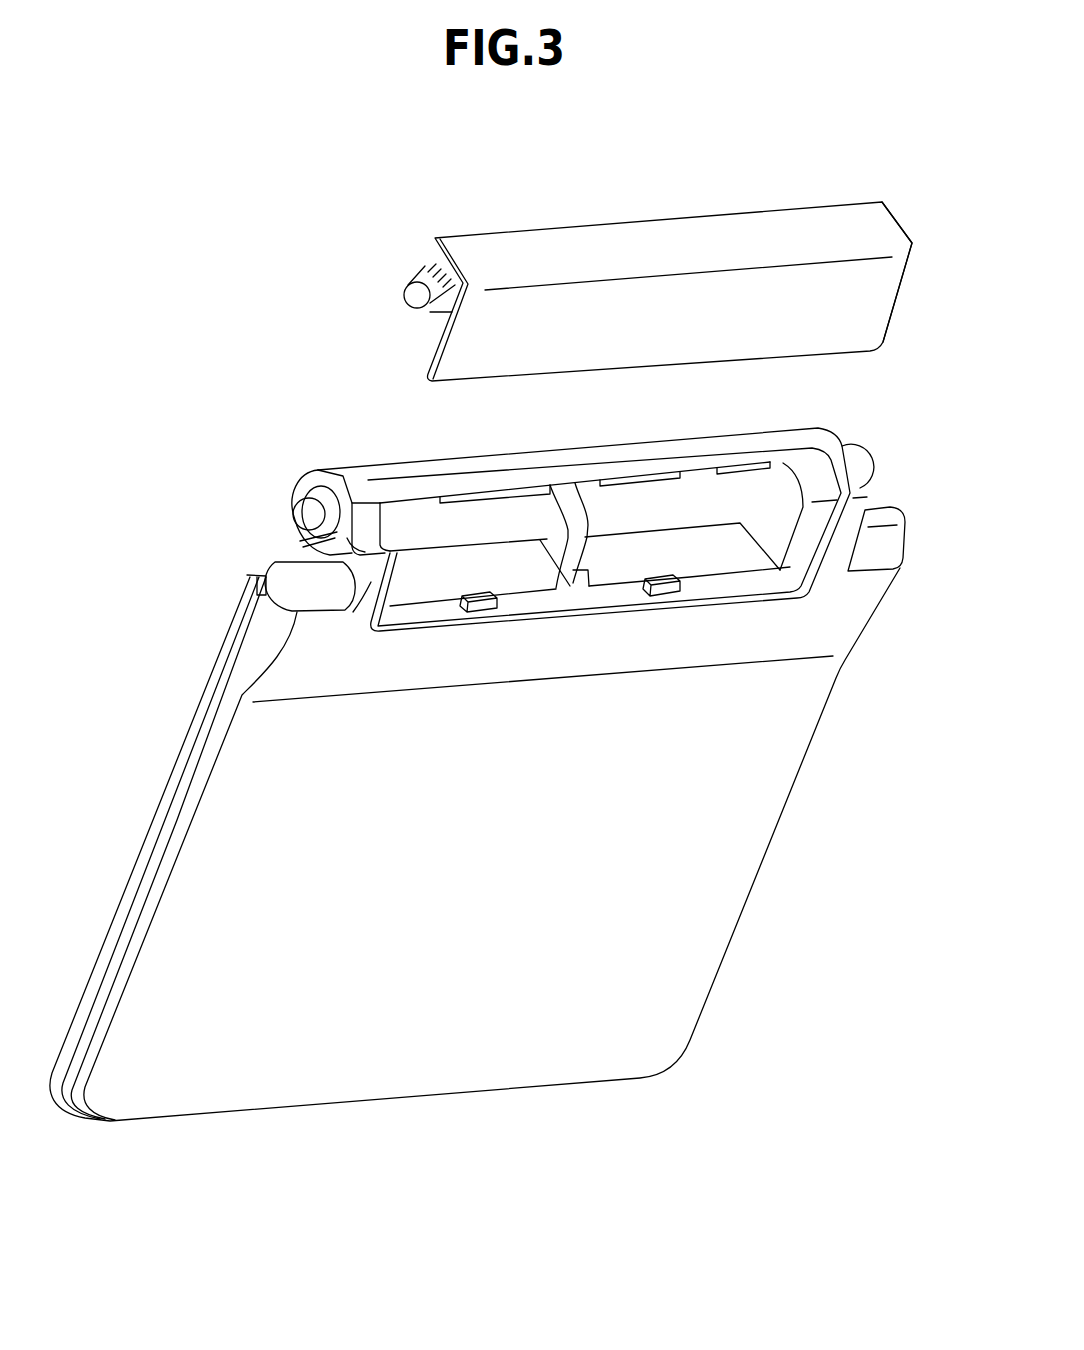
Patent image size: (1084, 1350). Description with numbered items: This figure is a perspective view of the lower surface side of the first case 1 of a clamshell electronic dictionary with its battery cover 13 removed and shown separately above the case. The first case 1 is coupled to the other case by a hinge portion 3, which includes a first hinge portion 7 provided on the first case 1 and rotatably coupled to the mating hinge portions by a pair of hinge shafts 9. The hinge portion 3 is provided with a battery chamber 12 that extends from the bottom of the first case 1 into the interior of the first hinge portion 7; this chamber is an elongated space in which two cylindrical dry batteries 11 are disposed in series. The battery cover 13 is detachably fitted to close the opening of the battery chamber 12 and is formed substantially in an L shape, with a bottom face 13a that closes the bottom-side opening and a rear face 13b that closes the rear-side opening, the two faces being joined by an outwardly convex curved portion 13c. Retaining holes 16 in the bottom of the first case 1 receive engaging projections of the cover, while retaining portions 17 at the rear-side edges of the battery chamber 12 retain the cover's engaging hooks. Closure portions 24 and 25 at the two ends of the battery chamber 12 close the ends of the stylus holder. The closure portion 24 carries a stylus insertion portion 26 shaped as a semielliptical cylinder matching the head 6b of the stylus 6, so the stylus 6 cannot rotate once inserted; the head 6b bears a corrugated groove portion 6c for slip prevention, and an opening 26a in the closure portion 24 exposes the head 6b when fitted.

The first case 1 is at (483, 1118).
The hinge portion 3 is at (296, 468).
The stylus 6 is at (425, 227).
The head 6b is at (415, 283).
The corrugated groove portion 6c is at (447, 277).
The first hinge portion 7 is at (315, 470).
The hinge shafts 9 is at (305, 515).
The batteries 11 is at (420, 525).
The battery chamber 12 is at (617, 572).
The battery cover 13 is at (611, 218).
The bottom face 13a is at (698, 345).
The rear face 13b is at (717, 235).
The curved portion 13c is at (903, 250).
The retaining holes 16 is at (481, 608).
The retaining portions 17 is at (493, 482).
The closure portion 24 is at (297, 603).
The closure portion 25 is at (810, 555).
The stylus insertion portion 26 is at (352, 538).
The opening 26a is at (365, 520).